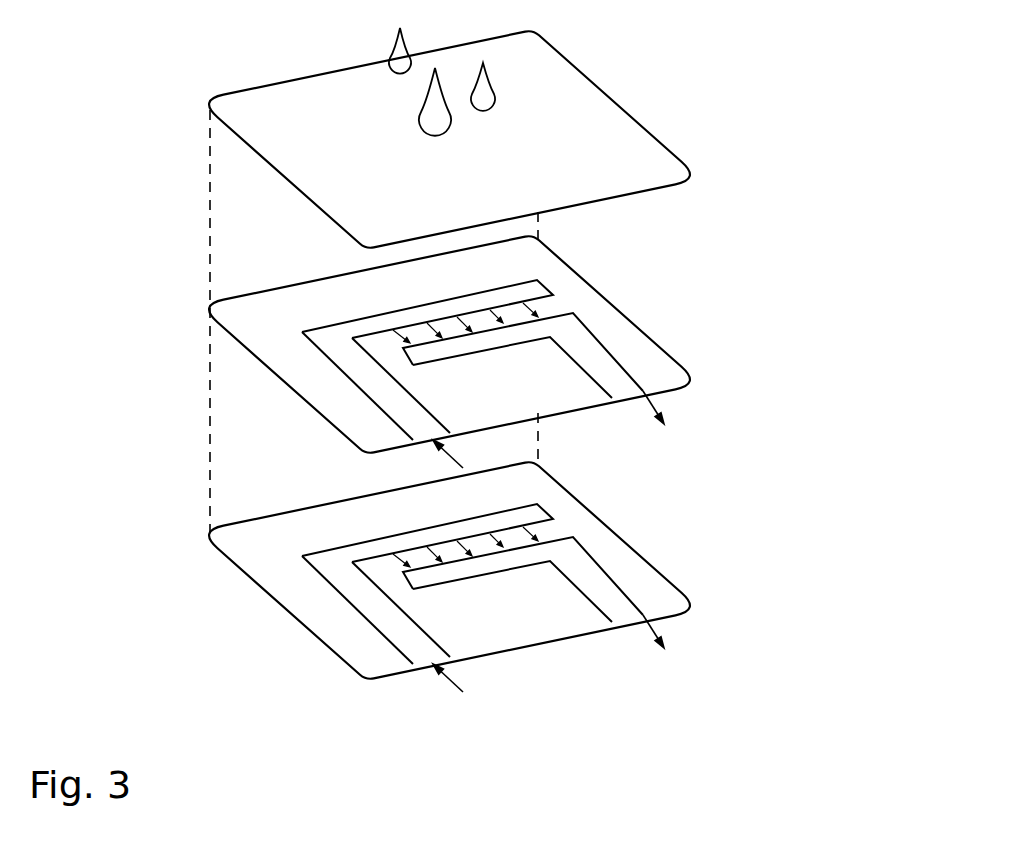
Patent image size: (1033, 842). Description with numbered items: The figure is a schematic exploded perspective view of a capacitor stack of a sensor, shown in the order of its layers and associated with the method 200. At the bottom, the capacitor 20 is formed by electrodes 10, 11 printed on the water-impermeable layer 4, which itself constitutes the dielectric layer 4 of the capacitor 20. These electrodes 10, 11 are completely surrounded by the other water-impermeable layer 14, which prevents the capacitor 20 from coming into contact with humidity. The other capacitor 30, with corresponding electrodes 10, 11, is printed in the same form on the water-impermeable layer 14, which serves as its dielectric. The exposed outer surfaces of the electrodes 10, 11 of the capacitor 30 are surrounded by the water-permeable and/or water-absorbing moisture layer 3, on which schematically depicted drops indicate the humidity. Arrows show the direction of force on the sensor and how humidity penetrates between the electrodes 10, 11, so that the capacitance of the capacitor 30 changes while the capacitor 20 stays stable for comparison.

The moisture layer 3 is at (618, 117).
The method 200 is at (804, 172).
The water-impermeable layer 14 is at (655, 352).
The dielectric layer/water-impermeable layer 4 is at (650, 578).
The electrode 10 is at (453, 502).
The electrode 11 is at (533, 290).
The capacitor 30 is at (403, 352).
The capacitor 20 is at (403, 578).